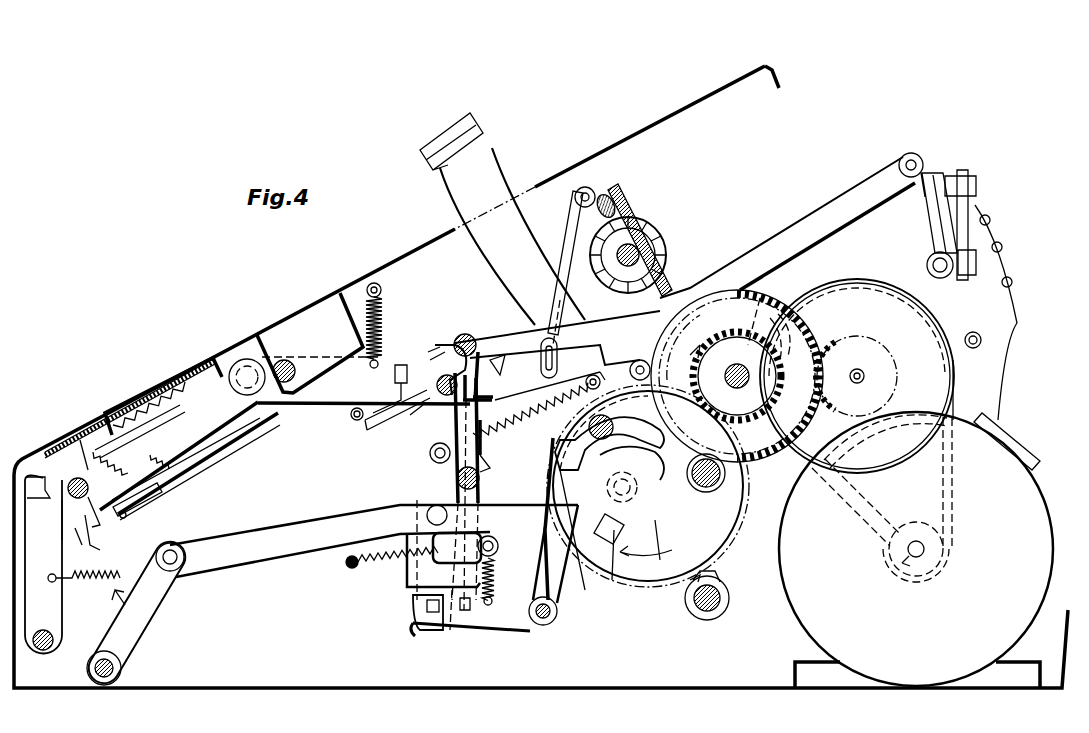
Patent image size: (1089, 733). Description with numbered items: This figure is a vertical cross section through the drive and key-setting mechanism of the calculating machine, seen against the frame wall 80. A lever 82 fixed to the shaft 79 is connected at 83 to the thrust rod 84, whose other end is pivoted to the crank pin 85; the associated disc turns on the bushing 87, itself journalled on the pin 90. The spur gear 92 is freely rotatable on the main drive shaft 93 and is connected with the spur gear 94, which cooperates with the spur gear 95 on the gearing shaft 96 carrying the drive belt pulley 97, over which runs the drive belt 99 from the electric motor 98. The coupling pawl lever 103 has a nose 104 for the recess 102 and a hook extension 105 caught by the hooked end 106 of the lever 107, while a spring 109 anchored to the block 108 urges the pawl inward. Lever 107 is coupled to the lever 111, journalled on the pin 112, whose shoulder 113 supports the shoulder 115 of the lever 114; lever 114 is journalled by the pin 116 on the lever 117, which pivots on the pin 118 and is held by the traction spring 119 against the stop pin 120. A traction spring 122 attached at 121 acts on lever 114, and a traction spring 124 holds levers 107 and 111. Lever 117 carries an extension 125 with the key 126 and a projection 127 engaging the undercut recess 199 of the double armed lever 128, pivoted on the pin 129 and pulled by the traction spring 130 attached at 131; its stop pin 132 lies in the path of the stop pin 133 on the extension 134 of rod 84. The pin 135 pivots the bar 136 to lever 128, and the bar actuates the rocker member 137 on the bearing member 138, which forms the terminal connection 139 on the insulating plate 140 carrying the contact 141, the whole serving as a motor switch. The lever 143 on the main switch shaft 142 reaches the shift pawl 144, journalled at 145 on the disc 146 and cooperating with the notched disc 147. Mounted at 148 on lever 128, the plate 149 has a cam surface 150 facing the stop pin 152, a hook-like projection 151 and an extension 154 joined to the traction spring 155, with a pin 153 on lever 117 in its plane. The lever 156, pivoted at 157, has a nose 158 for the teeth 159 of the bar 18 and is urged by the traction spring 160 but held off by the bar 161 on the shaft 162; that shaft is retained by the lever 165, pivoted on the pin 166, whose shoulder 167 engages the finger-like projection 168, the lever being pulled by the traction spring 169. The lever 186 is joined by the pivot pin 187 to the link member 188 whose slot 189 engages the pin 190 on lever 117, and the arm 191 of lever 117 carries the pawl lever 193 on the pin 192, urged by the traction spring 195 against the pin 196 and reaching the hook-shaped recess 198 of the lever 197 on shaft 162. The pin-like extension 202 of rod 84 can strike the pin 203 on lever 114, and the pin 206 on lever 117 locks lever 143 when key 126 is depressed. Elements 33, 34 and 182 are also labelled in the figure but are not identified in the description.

The bar 18 is at (200, 358).
The wheel 33 is at (655, 236).
The wheel hub 34 is at (640, 255).
The shaft 79 is at (122, 670).
The frame wall 80 is at (662, 128).
The lever 82 is at (143, 620).
The connection point 83 is at (172, 572).
The thrust rod 84 is at (298, 550).
The crank pin 85 is at (738, 500).
The bushing 87 is at (660, 540).
The pin 90 is at (646, 541).
The spur gear 92 is at (735, 337).
The main drive shaft 93 is at (745, 390).
The spur gear 94 is at (812, 300).
The spur gear 95 is at (850, 340).
The gearing shaft 96 is at (866, 372).
The drive belt pulley 97 is at (981, 348).
The electric motor 98 is at (998, 440).
The drive belt 99 is at (955, 408).
The recess 102 is at (662, 462).
The coupling pawl lever 103 is at (602, 528).
The nose 104 is at (725, 520).
The hook extension 105 is at (552, 540).
The hooked end 106 is at (585, 460).
The lever 107 is at (580, 585).
The block 108 is at (613, 582).
The spring 109 is at (621, 487).
The lever 111 is at (505, 628).
The pin 112 is at (550, 626).
The shoulder 113 is at (433, 632).
The lever 114 is at (438, 487).
The shoulder 115 is at (425, 597).
The pin 116 is at (470, 345).
The lever 117 is at (306, 395).
The pivot pin 118 is at (247, 360).
The traction spring 119 is at (370, 288).
The stop pin 120 is at (598, 345).
The connection point 121 is at (429, 455).
The traction spring 122 is at (540, 420).
The traction spring 124 is at (492, 575).
The extension 125 is at (525, 205).
The key 126 is at (478, 128).
The shoulder-like projection 127 is at (498, 355).
The double armed lever 128 is at (486, 464).
The pin 129 is at (479, 479).
The traction spring 130 is at (360, 568).
The connection point 131 is at (497, 545).
The stop pin 132 is at (451, 632).
The stop pin 133 is at (468, 612).
The extension 134 is at (405, 573).
The pin 135 is at (472, 336).
The bar 136 is at (745, 262).
The rocker member 137 is at (933, 222).
The bearing member 138 is at (932, 275).
The terminal connection 139 is at (966, 277).
The insulating plate 140 is at (970, 215).
The contact 141 is at (958, 178).
The main switch shaft 142 is at (730, 600).
The lever 143 is at (718, 573).
The shift pawl 144 is at (690, 343).
The journal 145 is at (740, 388).
The disc 146 is at (774, 350).
The notched disc 147 is at (752, 296).
The mounting point 148 is at (420, 412).
The plate 149 is at (356, 421).
The cam surface 150 is at (388, 420).
The hook-like projection 151 is at (440, 392).
The stop pin 152 is at (350, 415).
The pin 153 is at (400, 364).
The extension 154 is at (430, 352).
The traction spring 155 is at (444, 343).
The lever 156 is at (228, 410).
The pivot 157 is at (283, 358).
The nose 158 is at (176, 375).
The teeth 159 is at (148, 406).
The traction spring 160 is at (128, 450).
The bar 161 is at (98, 448).
The shaft 162 is at (83, 445).
The lever 165 is at (62, 610).
The pin 166 is at (46, 651).
The shoulder 167 is at (64, 520).
The finger-like projection 168 is at (66, 480).
The traction spring 169 is at (95, 583).
The cam 182 is at (606, 193).
The lever 186 is at (622, 194).
The pivot pin 187 is at (586, 186).
The link member 188 is at (562, 222).
The slot 189 is at (566, 310).
The pin 190 is at (545, 338).
The arm 191 is at (196, 452).
The pin 192 is at (102, 520).
The pawl lever 193 is at (126, 515).
The traction spring 195 is at (165, 488).
The pin 196 is at (152, 470).
The lever 197 is at (85, 548).
The hook-shaped recess 198 is at (102, 550).
The undercut recess 199 is at (482, 445).
The pin-like extension 202 is at (522, 405).
The pin 203 is at (426, 514).
The pin 206 is at (641, 360).